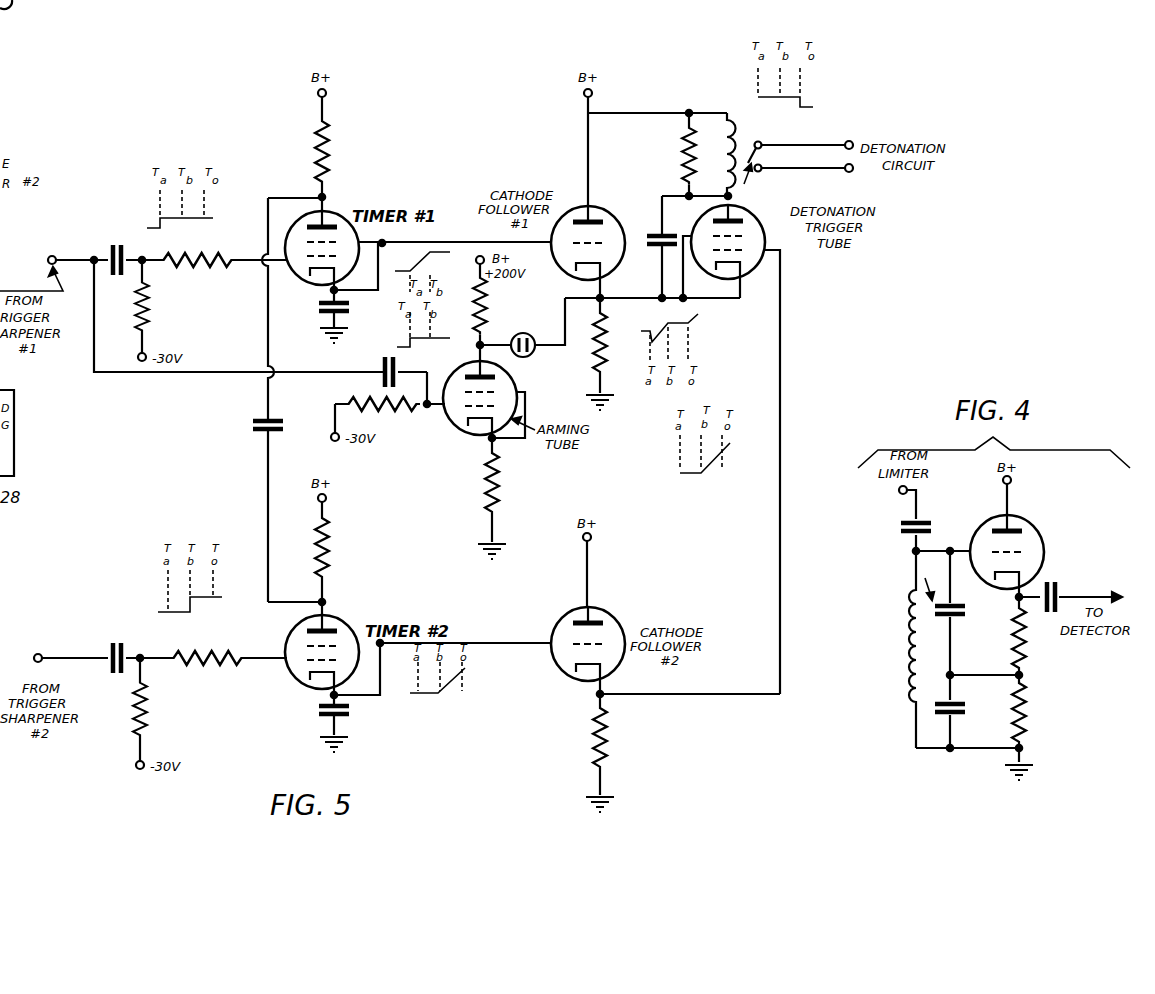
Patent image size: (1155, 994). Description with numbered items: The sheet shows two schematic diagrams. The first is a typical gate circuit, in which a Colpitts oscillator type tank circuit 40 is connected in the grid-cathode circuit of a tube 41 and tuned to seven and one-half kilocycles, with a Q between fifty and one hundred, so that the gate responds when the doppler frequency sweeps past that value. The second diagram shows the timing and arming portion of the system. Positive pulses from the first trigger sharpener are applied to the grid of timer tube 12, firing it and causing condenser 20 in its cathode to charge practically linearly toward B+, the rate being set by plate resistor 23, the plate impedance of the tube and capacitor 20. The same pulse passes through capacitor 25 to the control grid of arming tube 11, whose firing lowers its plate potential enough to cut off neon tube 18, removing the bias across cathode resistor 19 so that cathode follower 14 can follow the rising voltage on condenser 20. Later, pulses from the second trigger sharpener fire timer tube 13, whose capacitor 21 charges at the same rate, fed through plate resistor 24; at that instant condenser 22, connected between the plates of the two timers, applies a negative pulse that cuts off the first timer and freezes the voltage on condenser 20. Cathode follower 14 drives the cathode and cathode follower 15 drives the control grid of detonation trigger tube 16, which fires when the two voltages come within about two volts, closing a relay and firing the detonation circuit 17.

In FIG. 5, the arming tube 11 is at (459, 423).
In FIG. 5, the timer tube 12 is at (335, 212).
In FIG. 5, the timer tube 13 is at (335, 620).
In FIG. 5, the cathode follower 14 is at (594, 220).
In FIG. 5, the cathode follower 15 is at (612, 618).
In FIG. 5, the detonation trigger tube 16 is at (748, 270).
In FIG. 5, the detonation circuit 17 is at (759, 178).
In FIG. 5, the neon tube 18 is at (524, 334).
In FIG. 5, the cathode resistor 19 is at (590, 342).
In FIG. 5, the condenser 20 is at (320, 306).
In FIG. 5, the capacitor 21 is at (356, 722).
In FIG. 5, the condenser 22 is at (256, 431).
In FIG. 5, the plate resistor 23 is at (328, 167).
In FIG. 5, the plate resistor 24 is at (330, 567).
In FIG. 5, the capacitor 25 is at (398, 357).
In FIG. 4, the tank circuit 40 is at (925, 578).
In FIG. 4, the tube 41 is at (1040, 554).